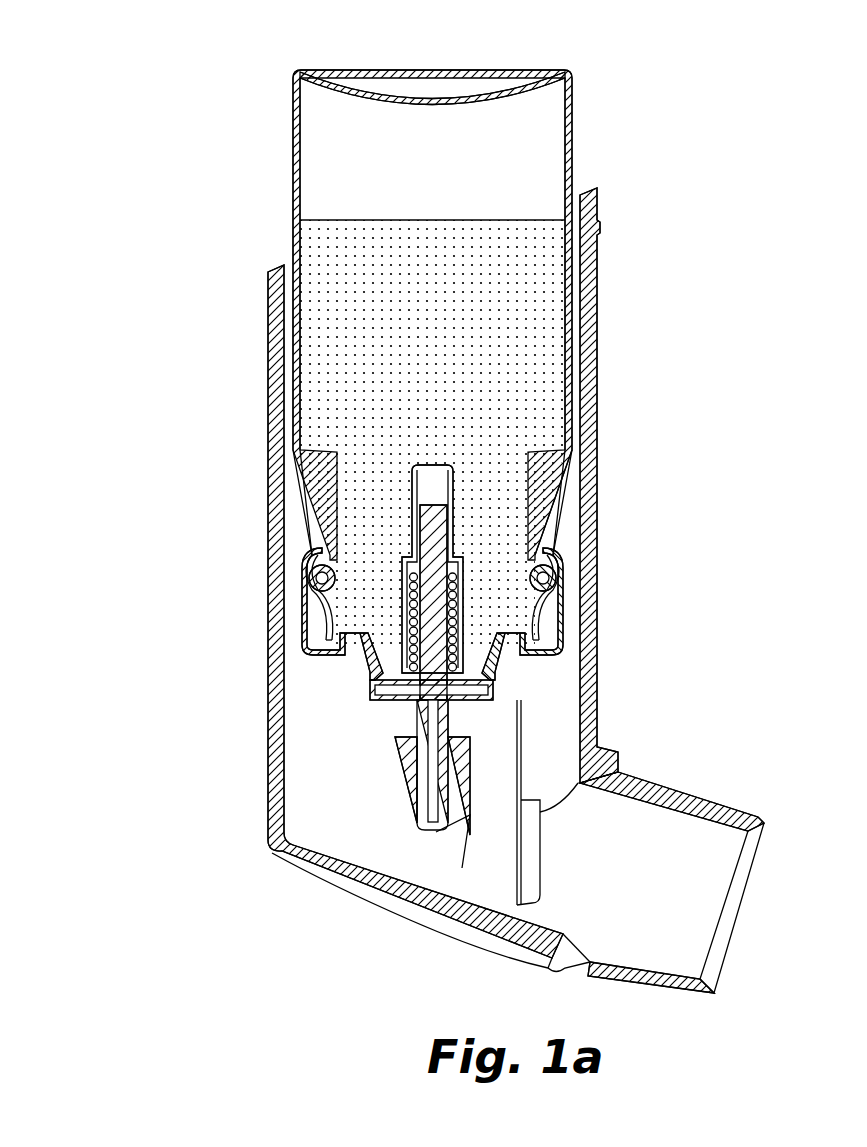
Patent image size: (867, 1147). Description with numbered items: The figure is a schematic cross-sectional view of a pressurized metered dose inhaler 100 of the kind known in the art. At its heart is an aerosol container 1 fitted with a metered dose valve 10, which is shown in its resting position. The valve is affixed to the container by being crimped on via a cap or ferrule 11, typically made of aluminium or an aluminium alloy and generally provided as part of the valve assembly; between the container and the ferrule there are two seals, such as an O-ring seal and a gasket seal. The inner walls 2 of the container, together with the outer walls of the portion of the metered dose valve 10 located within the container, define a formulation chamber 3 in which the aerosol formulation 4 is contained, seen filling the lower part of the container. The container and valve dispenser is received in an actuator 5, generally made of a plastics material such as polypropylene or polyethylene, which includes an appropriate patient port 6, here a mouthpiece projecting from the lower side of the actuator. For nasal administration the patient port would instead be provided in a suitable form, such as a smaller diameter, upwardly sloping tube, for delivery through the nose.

The metered dose inhaler 100 is at (112, 47).
The aerosol container 1 is at (293, 348).
The inner walls 2 is at (299, 181).
The formulation chamber 3 is at (545, 178).
The aerosol formulation 4 is at (545, 288).
The actuator 5 is at (593, 549).
The patient port 6 is at (690, 800).
The metered dose valve 10 is at (298, 585).
The ferrule 11 is at (310, 626).